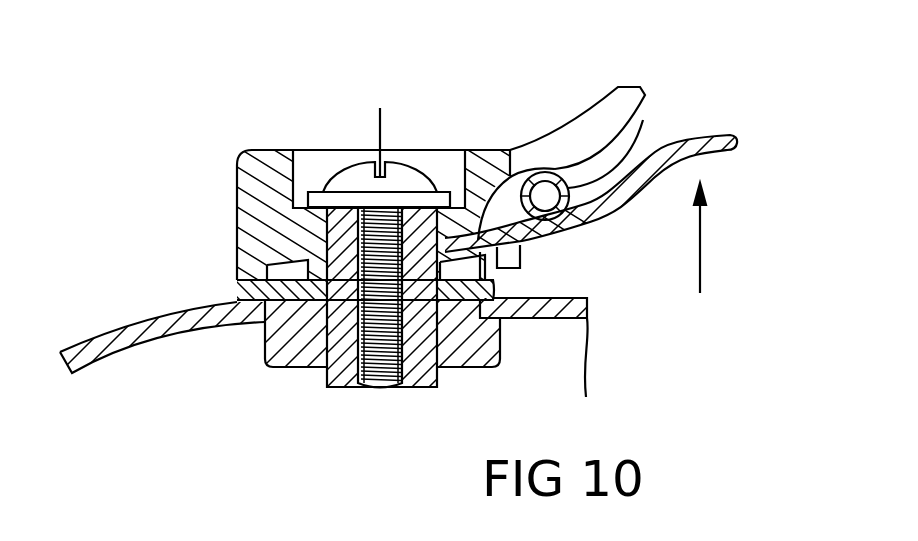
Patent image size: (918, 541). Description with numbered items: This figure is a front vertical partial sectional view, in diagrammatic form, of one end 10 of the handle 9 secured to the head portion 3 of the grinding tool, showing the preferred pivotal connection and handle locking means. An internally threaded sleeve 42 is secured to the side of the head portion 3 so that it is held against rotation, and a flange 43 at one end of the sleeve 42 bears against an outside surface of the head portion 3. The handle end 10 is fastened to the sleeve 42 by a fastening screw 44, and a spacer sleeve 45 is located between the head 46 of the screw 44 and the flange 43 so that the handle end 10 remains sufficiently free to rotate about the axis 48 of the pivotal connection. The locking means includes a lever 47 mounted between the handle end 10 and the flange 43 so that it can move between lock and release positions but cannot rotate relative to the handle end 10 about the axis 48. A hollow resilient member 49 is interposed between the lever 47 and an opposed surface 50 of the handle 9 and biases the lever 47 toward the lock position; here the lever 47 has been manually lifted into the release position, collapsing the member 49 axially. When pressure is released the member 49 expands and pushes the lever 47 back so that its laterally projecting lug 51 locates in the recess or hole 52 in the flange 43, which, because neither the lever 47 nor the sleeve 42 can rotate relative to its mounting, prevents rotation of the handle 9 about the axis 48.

The head portion 3 is at (104, 329).
The handle 9 is at (590, 95).
The end of handle 10 is at (270, 148).
The internally threaded sleeve 42 is at (325, 382).
The flange 43 is at (237, 290).
The fastening screw 44 is at (378, 390).
The spacer sleeve 45 is at (335, 230).
The head of screw 46 is at (412, 170).
The lever 47 is at (716, 140).
The axis of pivotal connection 48 is at (378, 128).
The hollow resilient member 49 is at (643, 120).
The opposed surface of handle 50 is at (566, 178).
The laterally projecting lug 51 is at (520, 245).
The recess or hole 52 is at (585, 298).